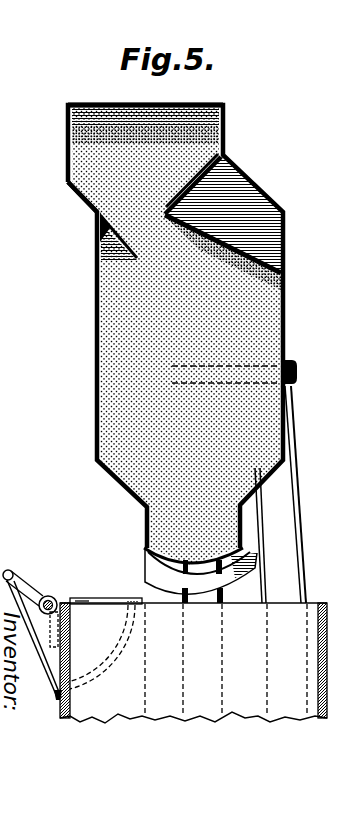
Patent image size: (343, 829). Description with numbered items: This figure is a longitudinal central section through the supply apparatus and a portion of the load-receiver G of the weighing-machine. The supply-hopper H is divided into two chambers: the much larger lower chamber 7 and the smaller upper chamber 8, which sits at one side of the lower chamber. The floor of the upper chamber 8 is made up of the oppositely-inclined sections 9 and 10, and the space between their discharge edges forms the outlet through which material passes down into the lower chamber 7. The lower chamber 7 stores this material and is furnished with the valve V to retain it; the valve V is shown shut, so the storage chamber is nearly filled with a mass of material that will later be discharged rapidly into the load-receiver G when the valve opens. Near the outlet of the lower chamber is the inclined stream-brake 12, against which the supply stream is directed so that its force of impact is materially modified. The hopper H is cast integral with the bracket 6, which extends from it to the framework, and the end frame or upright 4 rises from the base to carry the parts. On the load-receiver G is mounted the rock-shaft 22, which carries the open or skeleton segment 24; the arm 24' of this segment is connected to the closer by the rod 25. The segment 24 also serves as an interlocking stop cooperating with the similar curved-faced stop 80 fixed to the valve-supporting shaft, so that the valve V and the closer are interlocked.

The supply-hopper H is at (283, 299).
The upper chamber 8 is at (193, 108).
The inclined section 10 is at (89, 203).
The inclined section 9 is at (197, 181).
The lower chamber 7 is at (268, 248).
The bracket 6 is at (296, 371).
The stream-brake 12 is at (258, 484).
The end frame or upright 4 is at (291, 520).
The interlocking stop 80 is at (176, 583).
The valve V is at (198, 567).
The load-receiver G is at (193, 663).
The open or skeleton segment 24 is at (106, 591).
The rock-shaft 22 is at (50, 598).
The arm 24' is at (24, 575).
The rod 25 is at (30, 598).